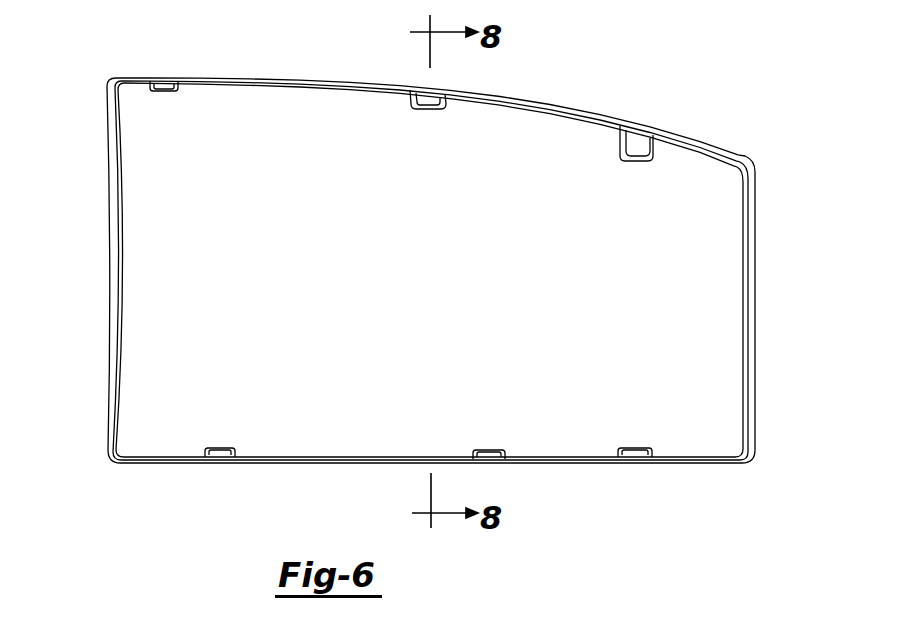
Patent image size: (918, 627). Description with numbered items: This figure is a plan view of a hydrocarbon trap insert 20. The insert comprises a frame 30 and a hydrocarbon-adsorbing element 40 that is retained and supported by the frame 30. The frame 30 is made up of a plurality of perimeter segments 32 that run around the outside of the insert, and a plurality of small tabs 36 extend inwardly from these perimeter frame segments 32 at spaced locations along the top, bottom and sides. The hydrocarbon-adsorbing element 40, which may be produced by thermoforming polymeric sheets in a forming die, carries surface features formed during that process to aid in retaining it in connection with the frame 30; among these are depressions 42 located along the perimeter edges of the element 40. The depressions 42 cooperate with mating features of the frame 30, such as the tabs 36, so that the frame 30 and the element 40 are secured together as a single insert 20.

The HC trap insert 20 is at (433, 272).
The frame 30 is at (708, 146).
The perimeter segments 32 is at (118, 265).
The small tabs 36 is at (172, 84).
The hydrocarbon-adsorbing element 40 is at (160, 162).
The depressions 42 is at (158, 84).